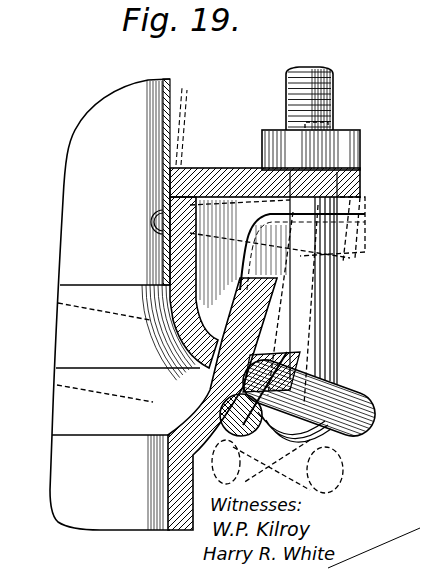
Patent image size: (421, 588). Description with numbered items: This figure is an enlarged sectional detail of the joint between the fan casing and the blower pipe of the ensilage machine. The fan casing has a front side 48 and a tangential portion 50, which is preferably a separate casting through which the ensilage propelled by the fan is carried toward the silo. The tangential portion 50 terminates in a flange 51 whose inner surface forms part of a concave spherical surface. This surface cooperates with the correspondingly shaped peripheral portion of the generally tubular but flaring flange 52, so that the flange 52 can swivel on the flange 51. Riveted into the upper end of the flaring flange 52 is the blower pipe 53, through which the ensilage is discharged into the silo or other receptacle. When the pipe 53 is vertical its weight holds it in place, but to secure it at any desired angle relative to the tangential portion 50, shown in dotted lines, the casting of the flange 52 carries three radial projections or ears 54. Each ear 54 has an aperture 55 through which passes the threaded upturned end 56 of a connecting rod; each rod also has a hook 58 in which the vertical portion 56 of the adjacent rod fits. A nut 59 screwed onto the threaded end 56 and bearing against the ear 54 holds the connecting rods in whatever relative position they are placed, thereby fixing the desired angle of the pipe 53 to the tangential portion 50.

The front side of fan casing 48 is at (387, 7).
The tangential portion 50 is at (72, 497).
The flange 51 is at (257, 320).
The flaring flange 52 is at (217, 350).
The blower pipe 53 is at (163, 134).
The radial projections or ears 54 is at (236, 163).
The aperture 55 is at (366, 196).
The threaded upturned end 56 is at (337, 288).
The hook 58 is at (355, 394).
The nut 59 is at (349, 133).